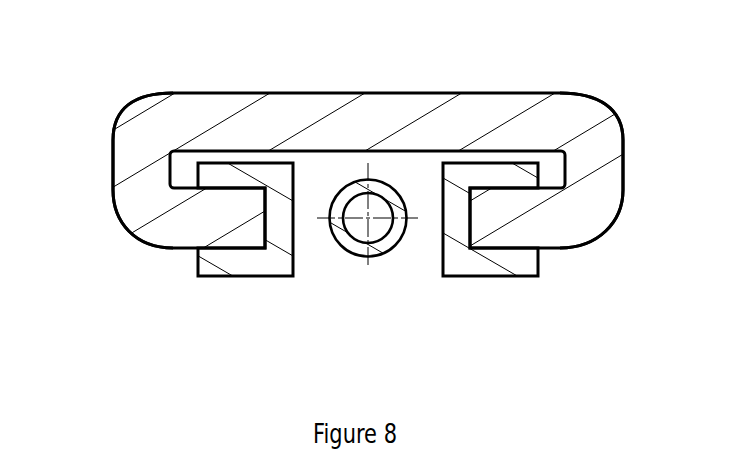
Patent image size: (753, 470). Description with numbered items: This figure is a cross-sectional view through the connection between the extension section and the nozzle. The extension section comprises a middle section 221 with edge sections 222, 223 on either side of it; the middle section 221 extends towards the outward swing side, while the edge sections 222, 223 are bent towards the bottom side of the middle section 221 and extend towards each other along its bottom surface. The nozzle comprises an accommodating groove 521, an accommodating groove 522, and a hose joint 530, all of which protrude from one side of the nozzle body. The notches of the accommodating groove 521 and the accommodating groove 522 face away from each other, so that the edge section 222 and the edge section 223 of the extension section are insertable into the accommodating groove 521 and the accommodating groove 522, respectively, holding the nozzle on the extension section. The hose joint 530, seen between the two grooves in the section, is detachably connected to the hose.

The middle section 221 is at (365, 93).
The edge section 222 is at (155, 230).
The edge section 223 is at (578, 227).
The accommodating groove 521 is at (218, 262).
The accommodating groove 522 is at (512, 260).
The hose joint 530 is at (364, 247).